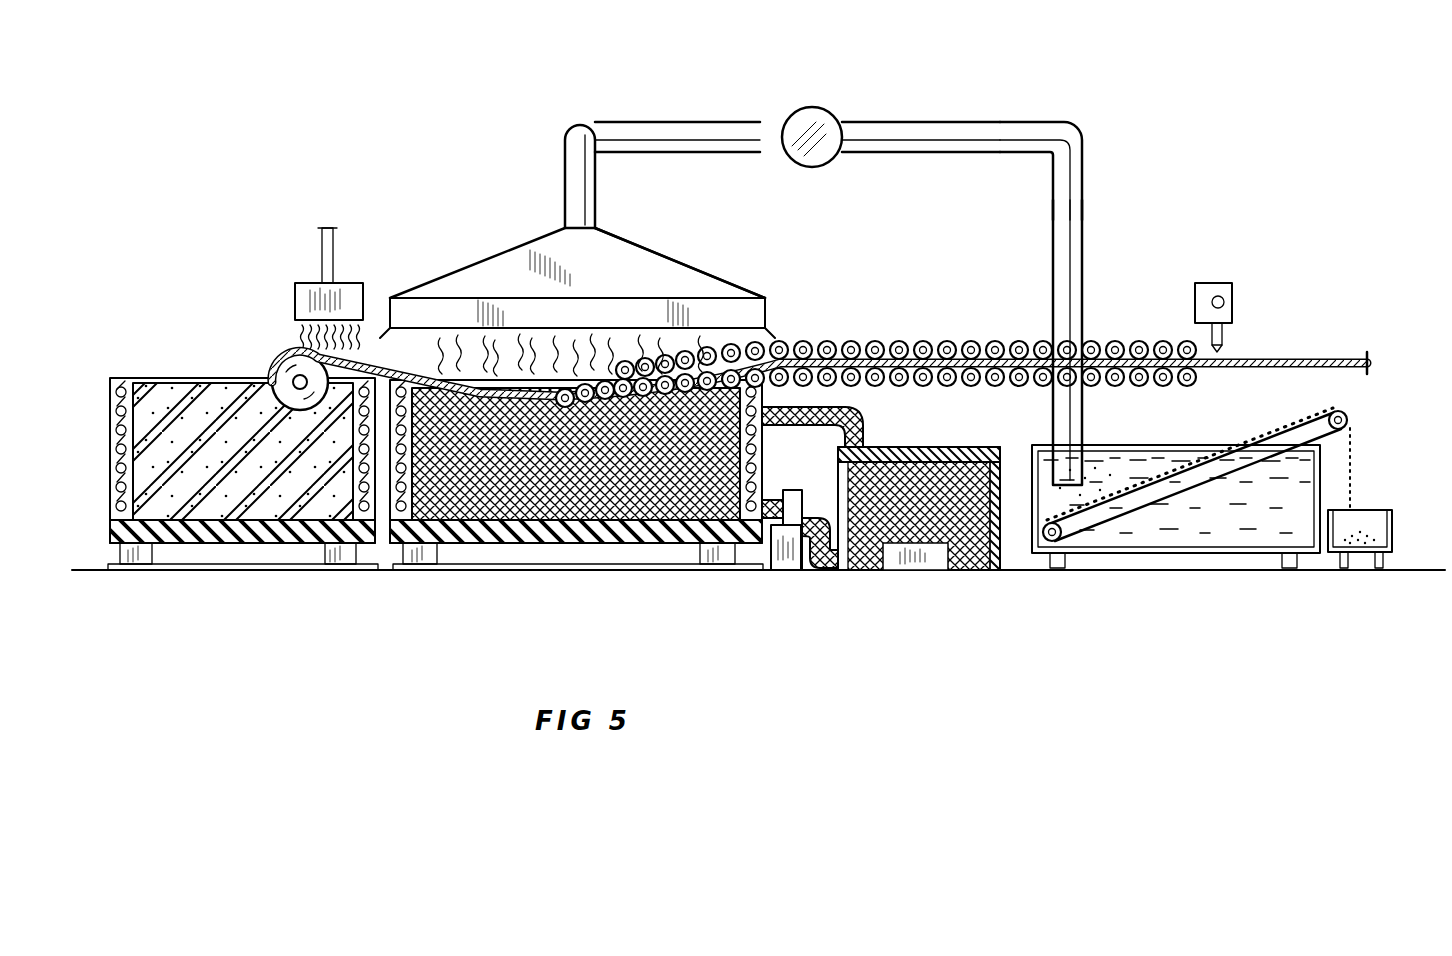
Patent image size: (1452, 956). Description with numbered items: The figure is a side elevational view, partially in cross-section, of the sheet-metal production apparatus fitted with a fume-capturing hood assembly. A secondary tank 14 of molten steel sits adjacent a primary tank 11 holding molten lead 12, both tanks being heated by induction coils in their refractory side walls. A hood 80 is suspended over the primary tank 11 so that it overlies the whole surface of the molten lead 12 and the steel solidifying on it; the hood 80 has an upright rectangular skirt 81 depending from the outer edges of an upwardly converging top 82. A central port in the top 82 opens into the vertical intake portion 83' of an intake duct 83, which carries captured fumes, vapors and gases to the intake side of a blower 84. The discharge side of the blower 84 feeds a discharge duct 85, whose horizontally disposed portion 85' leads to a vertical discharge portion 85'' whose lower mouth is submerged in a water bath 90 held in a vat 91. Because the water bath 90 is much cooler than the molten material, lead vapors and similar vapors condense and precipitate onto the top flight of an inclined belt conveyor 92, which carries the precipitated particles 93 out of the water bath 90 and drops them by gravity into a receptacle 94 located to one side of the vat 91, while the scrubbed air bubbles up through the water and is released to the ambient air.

The secondary tank 14 is at (114, 386).
The molten lead 12 is at (513, 510).
The primary tank 11 is at (636, 530).
The hood 80 is at (605, 276).
The skirt 81 is at (770, 318).
The top 82 is at (680, 257).
The intake duct 83 is at (659, 105).
The vertical intake portion 83' is at (552, 164).
The blower 84 is at (822, 112).
The discharge duct 85 is at (921, 99).
The horizontal discharge portion 85' is at (1036, 146).
The vertical discharge portion 85'' is at (1101, 325).
The water bath 90 is at (1148, 532).
The vat 91 is at (1320, 490).
The inclined belt conveyor 92 is at (1212, 494).
The precipitated particles 93 is at (1350, 446).
The receptacle 94 is at (1382, 518).